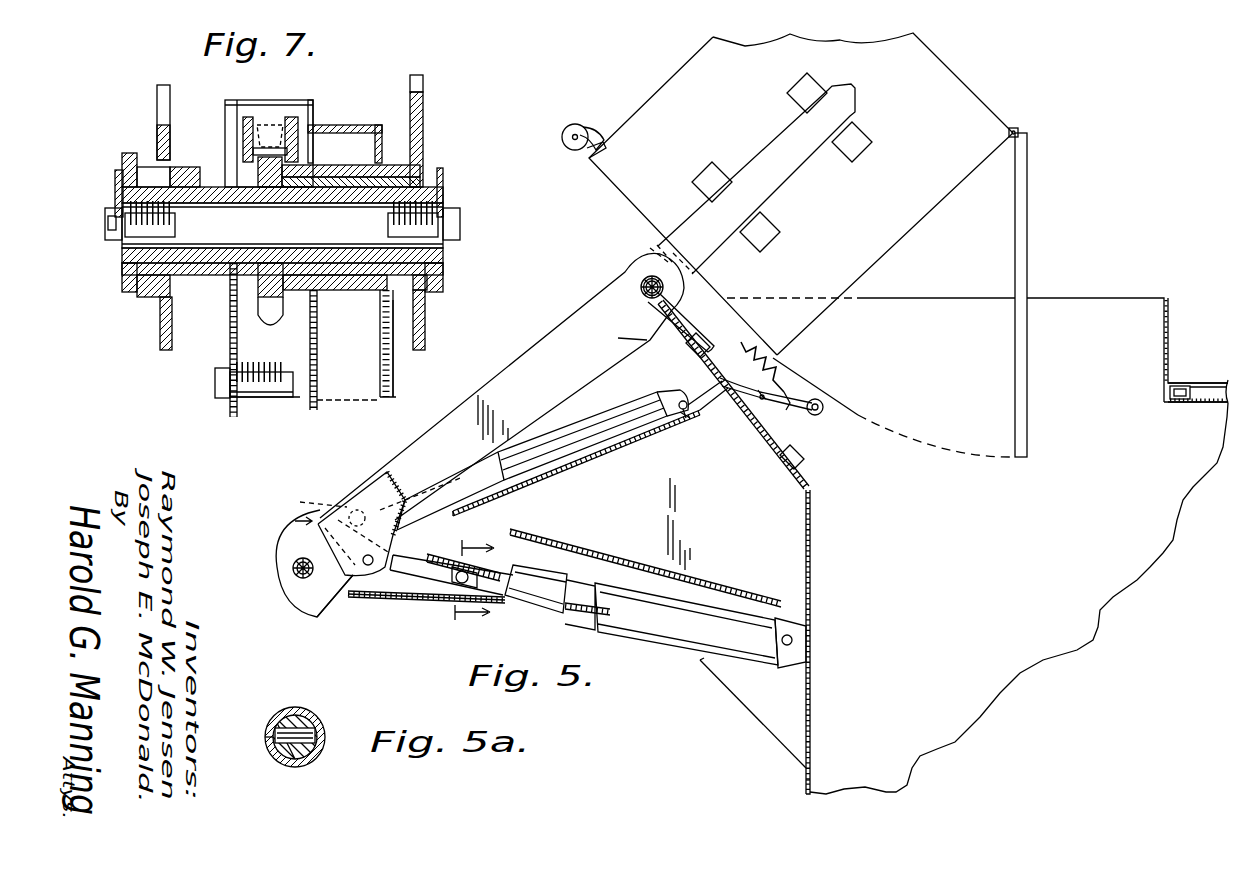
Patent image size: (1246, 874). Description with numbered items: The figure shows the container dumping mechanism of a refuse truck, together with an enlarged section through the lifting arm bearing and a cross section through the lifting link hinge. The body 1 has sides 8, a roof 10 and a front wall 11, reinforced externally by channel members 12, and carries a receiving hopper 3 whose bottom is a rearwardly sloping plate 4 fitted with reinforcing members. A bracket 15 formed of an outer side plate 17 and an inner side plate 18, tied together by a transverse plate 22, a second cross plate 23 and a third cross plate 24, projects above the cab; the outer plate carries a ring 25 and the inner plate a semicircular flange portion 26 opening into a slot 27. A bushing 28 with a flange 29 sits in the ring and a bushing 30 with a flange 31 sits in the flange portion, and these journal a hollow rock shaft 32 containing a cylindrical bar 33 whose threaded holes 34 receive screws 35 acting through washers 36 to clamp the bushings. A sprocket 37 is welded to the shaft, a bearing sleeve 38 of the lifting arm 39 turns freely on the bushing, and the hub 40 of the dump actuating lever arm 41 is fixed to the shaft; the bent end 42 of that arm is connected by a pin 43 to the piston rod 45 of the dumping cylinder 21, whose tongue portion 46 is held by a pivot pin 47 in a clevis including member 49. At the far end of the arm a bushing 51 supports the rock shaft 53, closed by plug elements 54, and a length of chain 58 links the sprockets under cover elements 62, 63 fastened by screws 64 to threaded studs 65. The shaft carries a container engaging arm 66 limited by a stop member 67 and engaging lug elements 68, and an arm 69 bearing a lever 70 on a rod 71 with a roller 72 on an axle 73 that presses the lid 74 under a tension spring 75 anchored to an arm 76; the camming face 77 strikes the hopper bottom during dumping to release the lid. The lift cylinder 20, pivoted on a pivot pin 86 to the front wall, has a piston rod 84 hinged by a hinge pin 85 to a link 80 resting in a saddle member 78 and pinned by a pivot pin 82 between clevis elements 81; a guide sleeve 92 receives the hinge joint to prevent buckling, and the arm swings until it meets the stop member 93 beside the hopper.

In FIG. 5, the body 1 is at (797, 783).
In FIG. 5, the receiving hopper 3 is at (1092, 298).
In FIG. 5, the hopper bottom plate 4 is at (773, 455).
In FIG. 5, the sides 8 is at (958, 735).
In FIG. 5, the roof 10 is at (1200, 404).
In FIG. 5, the front wall 11 is at (812, 733).
In FIG. 5, the channel members 12 is at (1186, 384).
In FIG. 5, the bracket 15 is at (745, 688).
In FIG. 7, the outer side plate 17 is at (425, 108).
In FIG. 7, the inner side plate 18 is at (173, 96).
In FIG. 5, the inner side plate 18 is at (768, 710).
In FIG. 5, the lift cylinder 20 is at (625, 640).
In FIG. 5, the dumping cylinder 21 is at (600, 446).
In FIG. 5, the transverse plate 22 is at (386, 612).
In FIG. 5, the second cross plate 23 is at (570, 472).
In FIG. 5, the third cross plate 24 is at (732, 588).
In FIG. 7, the ring 25 is at (380, 165).
In FIG. 7, the semicircular flange portion 26 is at (155, 300).
In FIG. 7, the slot 27 is at (157, 140).
In FIG. 7, the bushing 28 is at (340, 290).
In FIG. 5, the bushing 28 is at (292, 586).
In FIG. 7, the flange 29 is at (443, 290).
In FIG. 7, the bushing 30 is at (185, 282).
In FIG. 7, the flange 31 is at (124, 292).
In FIG. 7, the rock shaft 32 is at (326, 204).
In FIG. 5, the rock shaft 32 is at (293, 572).
In FIG. 7, the cylindrical bar 33 is at (282, 233).
In FIG. 5, the cylindrical bar 33 is at (292, 565).
In FIG. 7, the threaded holes 34 is at (178, 225).
In FIG. 7, the screws 35 is at (462, 224).
In FIG. 7, the washers 36 is at (117, 180).
In FIG. 7, the sprocket 37 is at (277, 325).
In FIG. 7, the bearing sleeve 38 is at (328, 292).
In FIG. 7, the lifting arm 39 is at (345, 400).
In FIG. 5, the lifting arm 39 is at (507, 372).
In FIG. 7, the hub 40 is at (186, 175).
In FIG. 5, the dump actuating lever arm 41 is at (285, 519).
In FIG. 5, the bent end 42 is at (350, 508).
In FIG. 5, the pin 43 is at (306, 501).
In FIG. 5, the piston rod 45 is at (490, 500).
In FIG. 5, the tongue portion 46 is at (670, 395).
In FIG. 5, the pivot pin 47 is at (685, 417).
In FIG. 5, the clevis member 49 is at (685, 422).
In FIG. 5, the bushing 51 is at (641, 283).
In FIG. 5, the rock shaft 53 is at (648, 294).
In FIG. 5, the plug element 54 is at (630, 285).
In FIG. 7, the length of chain 58 is at (272, 124).
In FIG. 7, the cover element 62 is at (240, 363).
In FIG. 7, the cover element 63 is at (225, 355).
In FIG. 7, the screws 64 is at (215, 385).
In FIG. 7, the threaded studs 65 is at (290, 400).
In FIG. 5, the container engaging arm 66 is at (777, 180).
In FIG. 5, the stop member 67 is at (655, 250).
In FIG. 5, the lug elements 68 is at (795, 103).
In FIG. 5, the arm 69 is at (690, 318).
In FIG. 5, the lever 70 is at (814, 400).
In FIG. 5, the rod 71 is at (768, 402).
In FIG. 5, the roller 72 is at (822, 413).
In FIG. 5, the axle 73 is at (830, 406).
In FIG. 5, the lid 74 is at (1028, 238).
In FIG. 5, the tension spring 75 is at (790, 384).
In FIG. 5, the arm 76 is at (752, 345).
In FIG. 5, the camming face 77 is at (708, 395).
In FIG. 5, the saddle member 78 is at (318, 619).
In FIG. 5, the link 80 is at (412, 558).
In FIG. 5A, the link 80 is at (272, 752).
In FIG. 7, the clevis elements 81 is at (396, 382).
In FIG. 5, the clevis elements 81 is at (352, 598).
In FIG. 5, the pivot pin 82 is at (368, 534).
In FIG. 5, the piston rod 84 is at (500, 570).
In FIG. 5A, the piston rod 84 is at (294, 708).
In FIG. 5, the hinge pin 85 is at (440, 592).
In FIG. 5A, the hinge pin 85 is at (268, 732).
In FIG. 5, the pivot pin 86 is at (794, 640).
In FIG. 5, the guide sleeve 92 is at (495, 605).
In FIG. 5A, the guide sleeve 92 is at (313, 758).
In FIG. 5, the stop member 93 is at (619, 337).